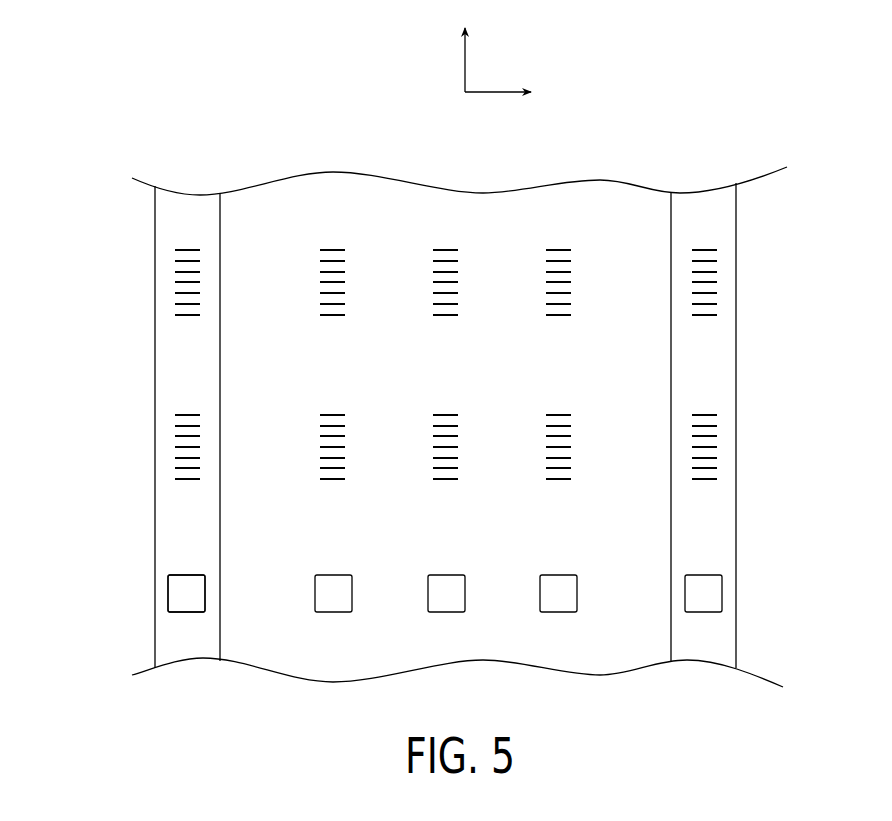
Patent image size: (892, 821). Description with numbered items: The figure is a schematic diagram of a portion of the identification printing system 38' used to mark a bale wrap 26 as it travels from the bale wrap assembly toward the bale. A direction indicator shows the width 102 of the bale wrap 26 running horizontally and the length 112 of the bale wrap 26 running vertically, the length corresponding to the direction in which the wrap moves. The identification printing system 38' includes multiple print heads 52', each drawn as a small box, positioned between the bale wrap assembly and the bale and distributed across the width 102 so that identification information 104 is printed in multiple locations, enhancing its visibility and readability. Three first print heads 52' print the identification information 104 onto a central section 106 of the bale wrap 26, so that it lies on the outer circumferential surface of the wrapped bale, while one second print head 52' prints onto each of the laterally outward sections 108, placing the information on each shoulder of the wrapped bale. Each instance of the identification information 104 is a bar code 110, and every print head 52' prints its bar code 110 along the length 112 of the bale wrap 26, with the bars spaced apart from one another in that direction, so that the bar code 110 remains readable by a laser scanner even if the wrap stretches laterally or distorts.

The bale wrap 26 is at (764, 366).
The identification printing system 38' is at (126, 585).
The print heads 52' is at (445, 649).
The width 102 is at (490, 92).
The identification information 104 is at (152, 427).
The central section 106 is at (401, 247).
The laterally outward sections 108 is at (195, 240).
The bar code 110 is at (722, 451).
The length 112 is at (465, 65).